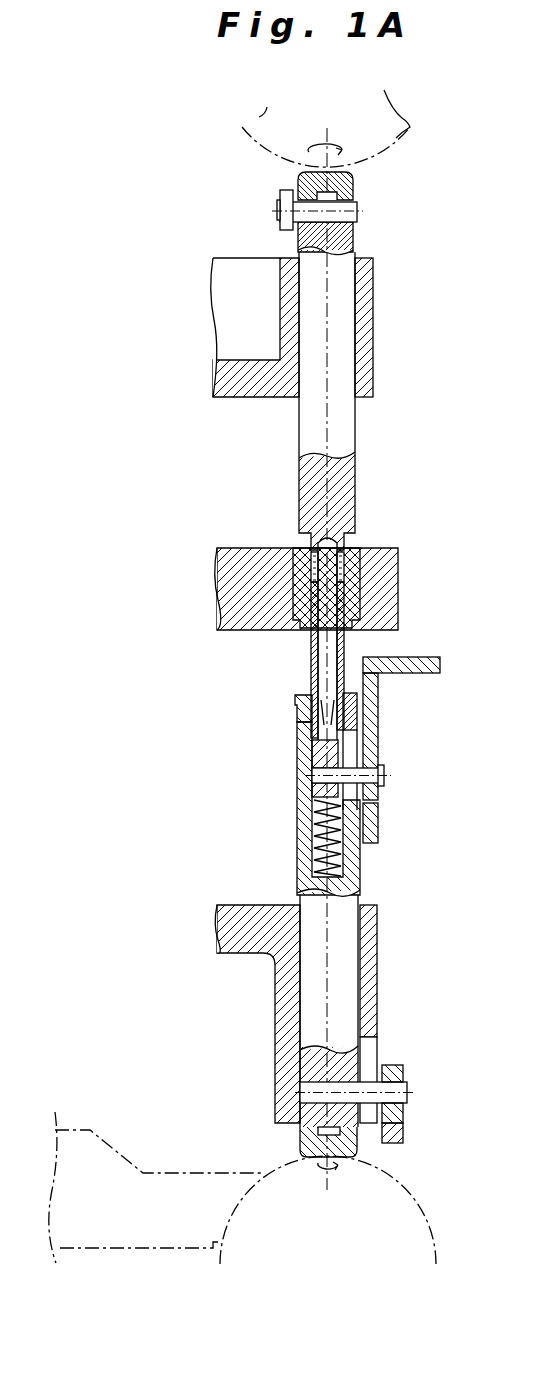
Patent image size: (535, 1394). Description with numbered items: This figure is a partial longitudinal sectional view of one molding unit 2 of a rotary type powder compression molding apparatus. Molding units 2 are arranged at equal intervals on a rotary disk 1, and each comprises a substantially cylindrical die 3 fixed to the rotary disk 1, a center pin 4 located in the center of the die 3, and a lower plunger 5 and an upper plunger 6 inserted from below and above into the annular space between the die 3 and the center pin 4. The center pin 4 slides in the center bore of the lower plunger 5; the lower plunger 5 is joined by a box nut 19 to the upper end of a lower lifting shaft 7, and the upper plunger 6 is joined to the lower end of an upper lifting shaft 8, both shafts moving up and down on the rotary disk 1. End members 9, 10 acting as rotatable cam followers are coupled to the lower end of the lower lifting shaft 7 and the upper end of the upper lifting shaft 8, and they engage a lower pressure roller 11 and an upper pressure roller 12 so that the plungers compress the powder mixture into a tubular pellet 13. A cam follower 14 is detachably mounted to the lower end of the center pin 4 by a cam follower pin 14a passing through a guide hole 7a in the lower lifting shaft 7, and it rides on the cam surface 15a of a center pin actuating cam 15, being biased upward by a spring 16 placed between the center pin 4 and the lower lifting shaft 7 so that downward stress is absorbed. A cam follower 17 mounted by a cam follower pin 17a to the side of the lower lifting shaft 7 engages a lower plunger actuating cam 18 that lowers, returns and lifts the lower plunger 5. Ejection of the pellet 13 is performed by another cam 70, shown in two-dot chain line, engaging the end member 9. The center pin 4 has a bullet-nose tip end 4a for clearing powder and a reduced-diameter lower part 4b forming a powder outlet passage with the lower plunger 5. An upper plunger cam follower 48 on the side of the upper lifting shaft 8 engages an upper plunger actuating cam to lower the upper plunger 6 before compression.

The rotary disk 1 is at (233, 392).
The molding unit 2 is at (413, 555).
The die 3 is at (297, 597).
The center pin 4 is at (323, 664).
The tip end 4a is at (309, 537).
The lower part 4b is at (333, 680).
The lower plunger 5 is at (347, 640).
The upper plunger 6 is at (350, 527).
The lower lifting shaft 7 is at (299, 760).
The guide hole 7a is at (367, 797).
The upper lifting shaft 8 is at (353, 235).
The end member 9 is at (300, 1142).
The end member 10 is at (343, 180).
The lower pressure roller 11 is at (283, 1187).
The upper pressure roller 12 is at (396, 138).
The tubular pellet 13 is at (300, 570).
The cam follower 14 is at (382, 797).
The cam follower pin 14a is at (313, 790).
The center pin actuating cam 15 is at (375, 720).
The cam surface 15a is at (358, 752).
The spring 16 is at (323, 845).
The cam follower 17 is at (393, 1067).
The cam follower pin 17a is at (367, 1087).
The lower plunger actuating cam 18 is at (403, 1138).
The box nut 19 is at (298, 710).
The upper plunger cam follower 48 is at (284, 229).
The cam 70 is at (128, 1163).